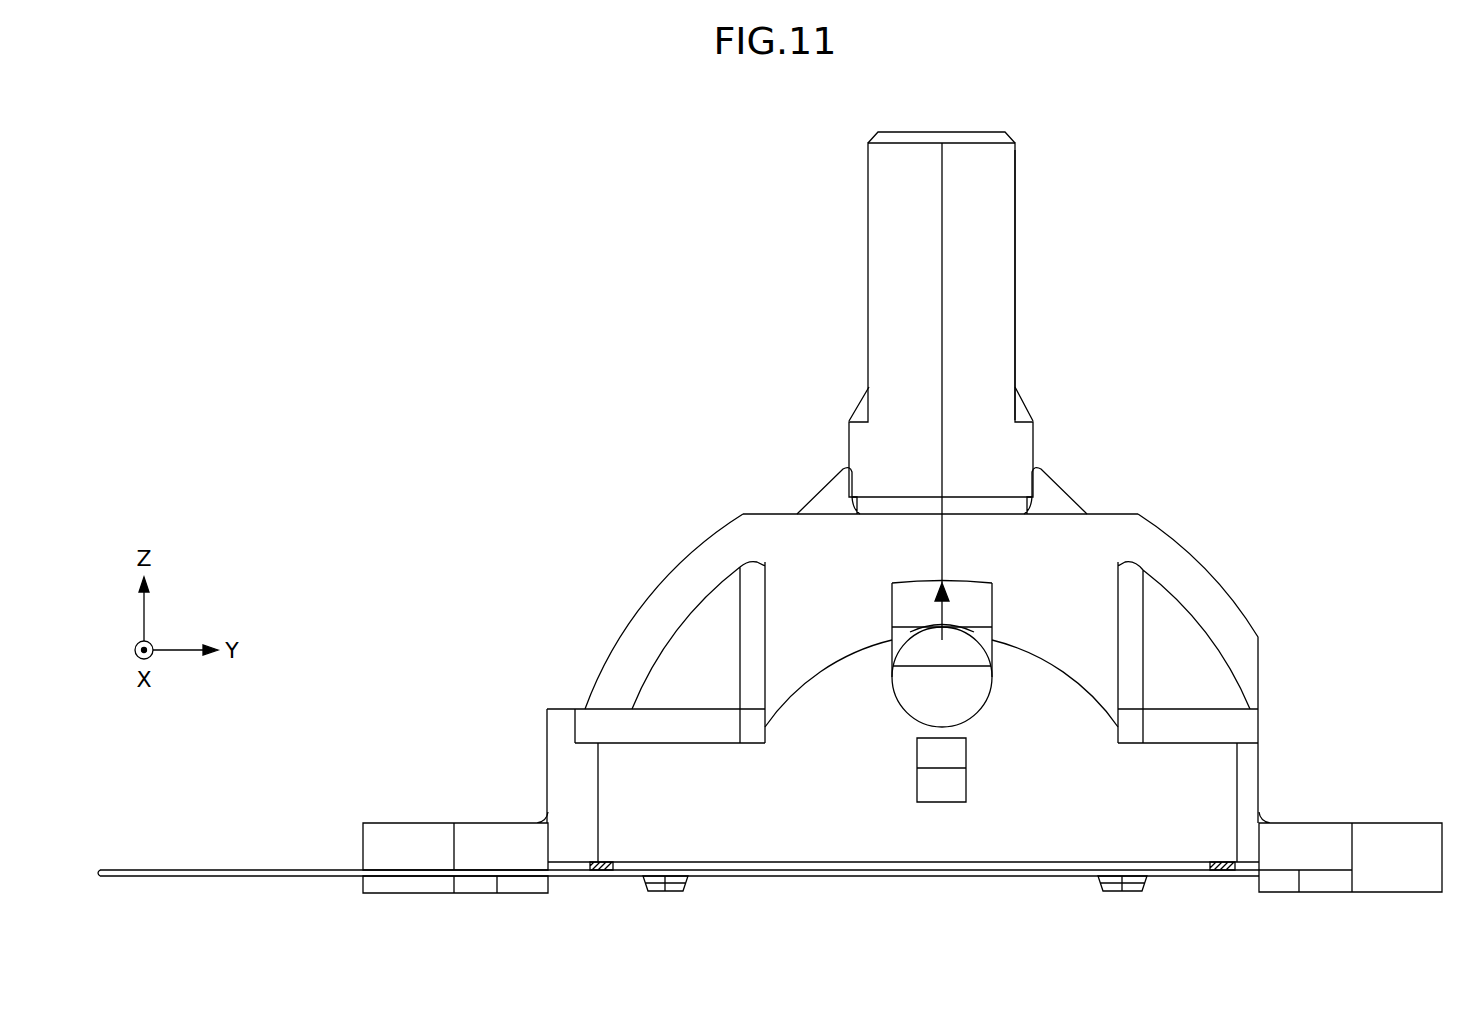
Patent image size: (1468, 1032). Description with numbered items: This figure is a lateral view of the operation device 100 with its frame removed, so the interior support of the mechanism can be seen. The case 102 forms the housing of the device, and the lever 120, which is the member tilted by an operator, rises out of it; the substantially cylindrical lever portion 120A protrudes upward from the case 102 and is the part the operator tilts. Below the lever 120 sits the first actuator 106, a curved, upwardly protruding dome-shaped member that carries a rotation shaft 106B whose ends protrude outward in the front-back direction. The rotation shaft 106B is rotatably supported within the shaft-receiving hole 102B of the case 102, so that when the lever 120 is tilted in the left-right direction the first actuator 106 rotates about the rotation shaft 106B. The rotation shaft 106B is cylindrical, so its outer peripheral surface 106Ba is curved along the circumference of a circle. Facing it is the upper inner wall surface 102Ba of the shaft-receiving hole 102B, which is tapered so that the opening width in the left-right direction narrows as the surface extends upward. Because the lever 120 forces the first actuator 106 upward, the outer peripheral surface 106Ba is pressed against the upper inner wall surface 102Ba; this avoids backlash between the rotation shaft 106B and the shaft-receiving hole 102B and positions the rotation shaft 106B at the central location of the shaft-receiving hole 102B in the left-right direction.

The operation device 100 is at (1412, 97).
The case 102 is at (1218, 568).
The shaft-receiving hole 102B is at (955, 615).
The upper inner wall surface 102Ba is at (924, 642).
The first actuator 106 is at (1055, 472).
The rotation shaft 106B is at (930, 692).
The outer peripheral surface 106Ba is at (958, 642).
The lever 120 is at (1018, 130).
The lever portion 120A is at (1018, 163).